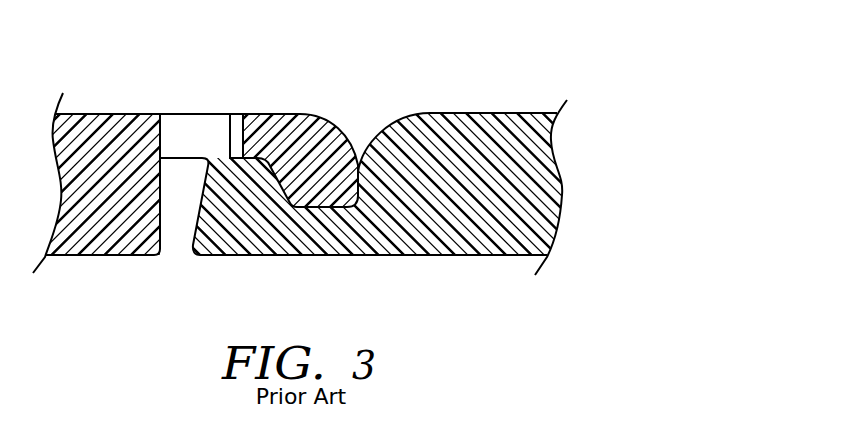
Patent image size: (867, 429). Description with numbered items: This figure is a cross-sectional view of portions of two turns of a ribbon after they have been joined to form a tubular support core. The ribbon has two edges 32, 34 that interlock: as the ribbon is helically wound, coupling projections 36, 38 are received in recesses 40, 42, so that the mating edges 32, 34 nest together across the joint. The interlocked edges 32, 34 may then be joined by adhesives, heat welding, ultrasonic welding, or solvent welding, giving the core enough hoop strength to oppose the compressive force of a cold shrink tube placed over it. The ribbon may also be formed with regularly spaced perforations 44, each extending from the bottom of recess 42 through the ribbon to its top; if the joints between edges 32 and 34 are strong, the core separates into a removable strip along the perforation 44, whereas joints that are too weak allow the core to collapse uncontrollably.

The edge 32 is at (203, 255).
The edge 34 is at (362, 183).
The coupling projection 36 is at (230, 133).
The coupling projection 38 is at (358, 165).
The recess 40 is at (303, 205).
The recess 42 is at (162, 232).
The perforation 44 is at (180, 140).